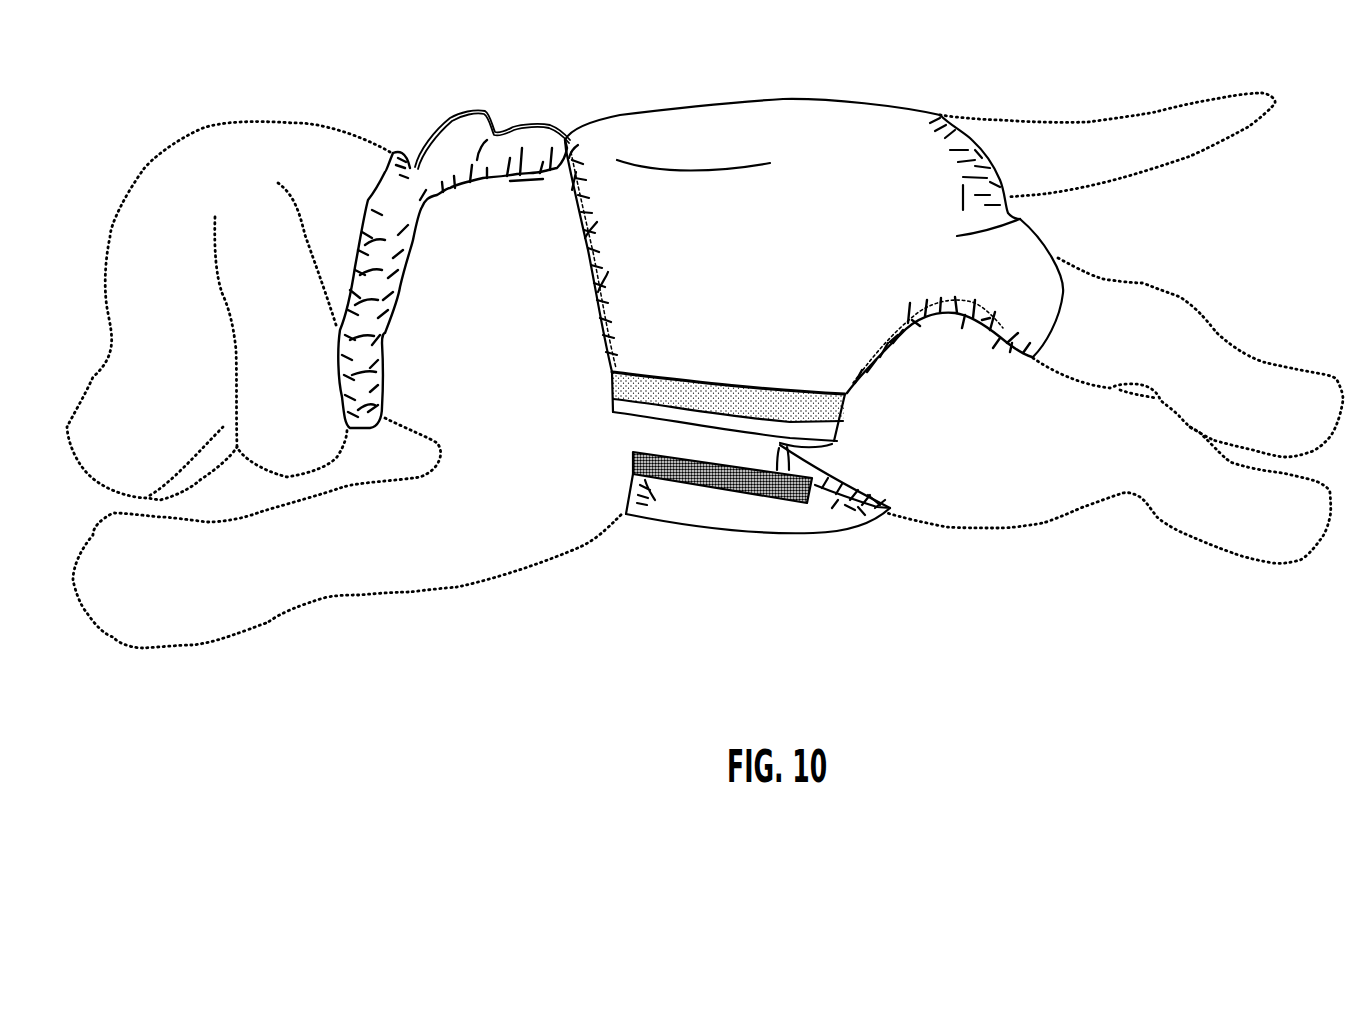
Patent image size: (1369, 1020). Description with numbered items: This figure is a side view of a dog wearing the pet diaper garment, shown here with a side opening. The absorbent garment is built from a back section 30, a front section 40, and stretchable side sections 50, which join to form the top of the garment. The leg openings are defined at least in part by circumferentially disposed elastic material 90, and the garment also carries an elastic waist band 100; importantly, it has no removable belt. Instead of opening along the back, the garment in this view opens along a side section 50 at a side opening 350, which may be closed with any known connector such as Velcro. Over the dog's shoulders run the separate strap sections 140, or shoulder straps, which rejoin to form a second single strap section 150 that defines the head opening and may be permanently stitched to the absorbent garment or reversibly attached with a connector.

The back section 30 is at (990, 281).
The front section 40 is at (733, 540).
The stretchable side sections 50 is at (752, 284).
The circumferentially disposed elastic material 90 is at (880, 348).
The elastic waist band 100 is at (603, 261).
The separate strap sections 140 is at (380, 337).
The second single strap section 150 is at (452, 123).
The side opening 350 is at (870, 507).